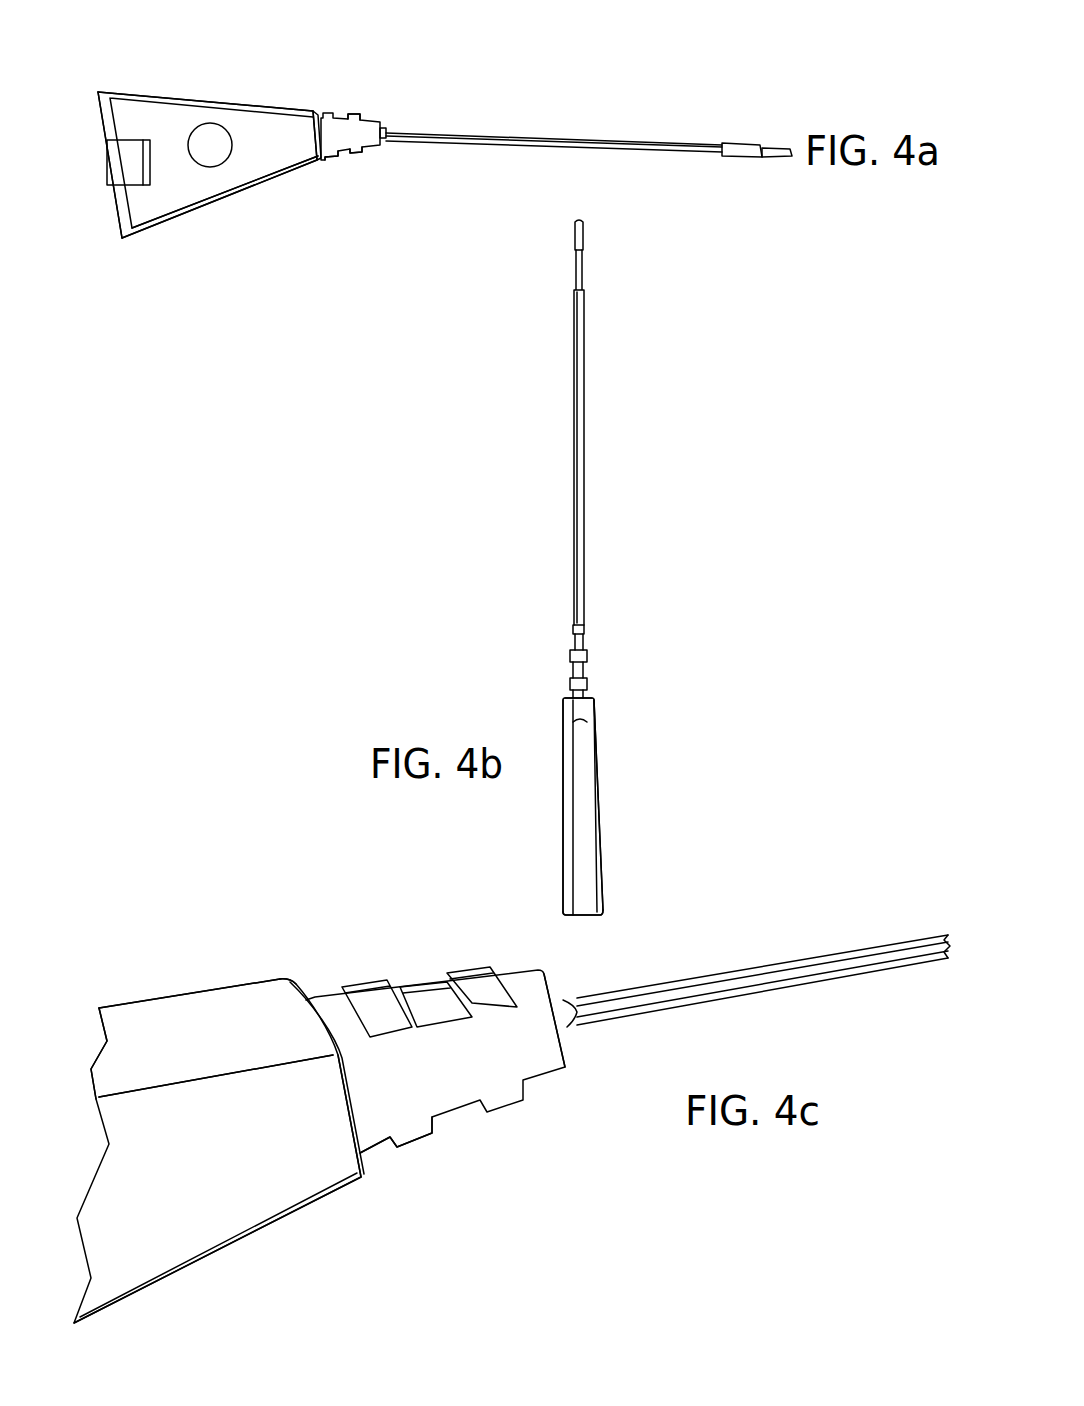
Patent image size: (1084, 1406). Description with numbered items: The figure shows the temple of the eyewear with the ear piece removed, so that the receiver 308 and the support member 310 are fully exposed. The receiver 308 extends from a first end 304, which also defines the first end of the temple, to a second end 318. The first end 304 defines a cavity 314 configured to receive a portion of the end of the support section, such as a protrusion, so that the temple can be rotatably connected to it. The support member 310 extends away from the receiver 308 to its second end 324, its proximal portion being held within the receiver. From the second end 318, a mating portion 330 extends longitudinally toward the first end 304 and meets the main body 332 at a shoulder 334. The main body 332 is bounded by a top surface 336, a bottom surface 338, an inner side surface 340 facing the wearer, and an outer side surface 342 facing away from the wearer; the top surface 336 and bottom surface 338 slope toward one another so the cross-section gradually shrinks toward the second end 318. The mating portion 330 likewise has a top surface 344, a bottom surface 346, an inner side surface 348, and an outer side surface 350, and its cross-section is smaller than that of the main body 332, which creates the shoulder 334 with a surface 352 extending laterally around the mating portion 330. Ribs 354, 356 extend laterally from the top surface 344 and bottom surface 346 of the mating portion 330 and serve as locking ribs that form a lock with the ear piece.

In FIG. 4a, the first end 304 is at (118, 212).
In FIG. 4b, the first end 304 is at (598, 905).
In FIG. 4a, the receiver 308 is at (243, 122).
In FIG. 4b, the receiver 308 is at (580, 790).
In FIG. 4c, the receiver 308 is at (171, 1244).
In FIG. 4a, the support member 310 is at (607, 140).
In FIG. 4b, the support member 310 is at (583, 402).
In FIG. 4c, the support member 310 is at (818, 967).
In FIG. 4a, the cavity 314 is at (118, 162).
In FIG. 4a, the second end 318 is at (378, 123).
In FIG. 4b, the second end 318 is at (583, 640).
In FIG. 4c, the second end 318 is at (550, 1057).
In FIG. 4a, the second end 324 is at (783, 158).
In FIG. 4b, the second end 324 is at (575, 228).
In FIG. 4a, the mating portion 330 is at (332, 113).
In FIG. 4b, the mating portion 330 is at (571, 663).
In FIG. 4c, the mating portion 330 is at (448, 1087).
In FIG. 4a, the main body 332 is at (213, 173).
In FIG. 4c, the main body 332 is at (130, 1039).
In FIG. 4a, the shoulder 334 is at (322, 163).
In FIG. 4c, the shoulder 334 is at (300, 978).
In FIG. 4a, the top surface 336 is at (162, 98).
In FIG. 4b, the top surface 336 is at (590, 722).
In FIG. 4c, the top surface 336 is at (206, 1005).
In FIG. 4a, the bottom surface 338 is at (157, 218).
In FIG. 4a, the inner side surface 340 is at (268, 160).
In FIG. 4b, the inner side surface 340 is at (603, 838).
In FIG. 4c, the inner side surface 340 is at (268, 1166).
In FIG. 4b, the outer side surface 342 is at (563, 835).
In FIG. 4a, the top surface 344 is at (357, 118).
In FIG. 4c, the top surface 344 is at (425, 995).
In FIG. 4a, the bottom surface 346 is at (380, 150).
In FIG. 4b, the inner side surface 348 is at (586, 670).
In FIG. 4c, the inner side surface 348 is at (402, 1110).
In FIG. 4b, the outer side surface 350 is at (570, 684).
In FIG. 4a, the surface 352 is at (313, 113).
In FIG. 4c, the surface 352 is at (355, 1090).
In FIG. 4c, the rib 354 is at (375, 993).
In FIG. 4c, the rib 356 is at (477, 978).